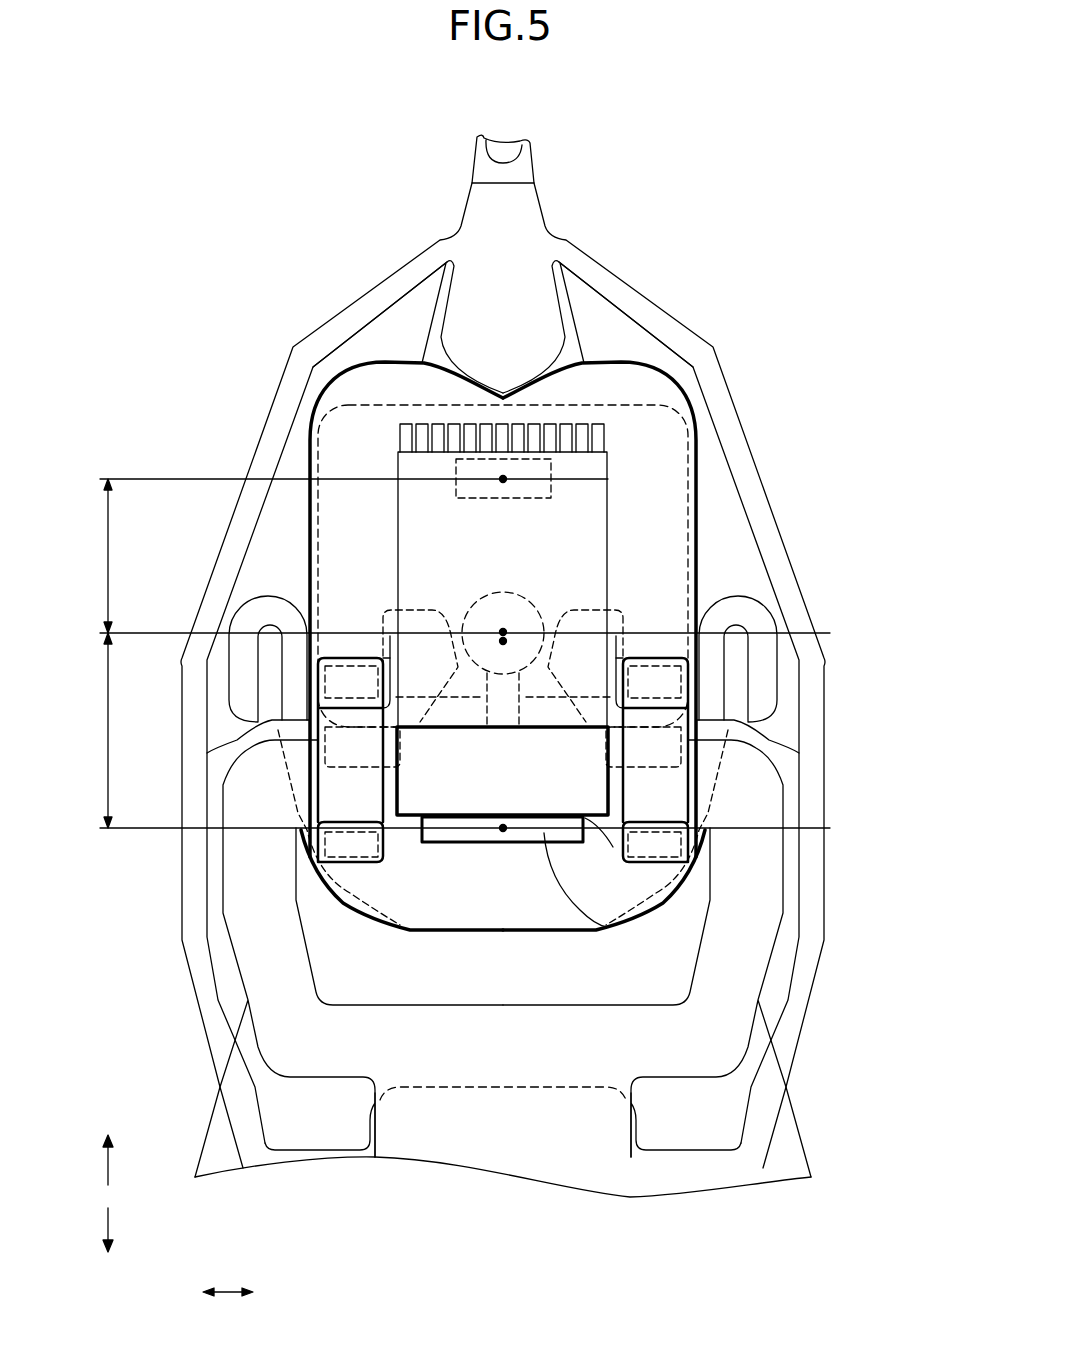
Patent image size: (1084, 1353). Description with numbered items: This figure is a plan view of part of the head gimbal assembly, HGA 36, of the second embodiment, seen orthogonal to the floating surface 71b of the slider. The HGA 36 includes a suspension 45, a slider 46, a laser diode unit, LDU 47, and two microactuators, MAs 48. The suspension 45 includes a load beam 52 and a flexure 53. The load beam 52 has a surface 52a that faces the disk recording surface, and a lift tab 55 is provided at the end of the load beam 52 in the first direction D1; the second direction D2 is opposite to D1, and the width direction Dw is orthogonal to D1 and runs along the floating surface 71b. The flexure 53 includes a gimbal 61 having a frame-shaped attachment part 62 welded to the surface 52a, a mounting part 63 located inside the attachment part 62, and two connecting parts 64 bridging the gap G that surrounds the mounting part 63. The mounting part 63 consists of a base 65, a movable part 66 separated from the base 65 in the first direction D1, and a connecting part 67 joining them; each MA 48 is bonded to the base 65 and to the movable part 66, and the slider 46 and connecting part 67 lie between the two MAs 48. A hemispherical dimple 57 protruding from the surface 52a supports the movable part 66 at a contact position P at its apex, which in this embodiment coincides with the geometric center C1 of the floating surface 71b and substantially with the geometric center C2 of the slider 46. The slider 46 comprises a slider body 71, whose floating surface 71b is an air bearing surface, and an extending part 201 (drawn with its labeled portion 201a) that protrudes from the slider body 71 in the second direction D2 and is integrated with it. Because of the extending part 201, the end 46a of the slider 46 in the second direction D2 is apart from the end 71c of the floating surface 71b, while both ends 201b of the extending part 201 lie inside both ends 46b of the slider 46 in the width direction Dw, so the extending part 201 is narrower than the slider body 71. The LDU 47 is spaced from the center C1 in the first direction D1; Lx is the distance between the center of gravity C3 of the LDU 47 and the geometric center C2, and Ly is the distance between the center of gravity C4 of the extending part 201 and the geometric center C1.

The HGA 36 is at (215, 165).
The suspension 45 is at (503, 680).
The flexure 53 is at (503, 680).
The gimbal 61 is at (503, 680).
The attachment part 62 is at (624, 276).
The lift tab 55 is at (534, 148).
The gap G is at (381, 344).
The mounting part 63 is at (700, 478).
The movable part 66 is at (667, 537).
The connecting parts 64 is at (237, 696).
The slider 46 is at (615, 480).
The end of the slider 46a is at (627, 887).
The ends of the slider 46b is at (337, 763).
The laser diode unit 47 is at (553, 477).
The center of gravity of the LDU C3 is at (503, 479).
The slider body 71 is at (647, 682).
The floating surface 71b is at (583, 565).
The end of the floating surface 71c is at (586, 838).
The dimple 57 is at (533, 593).
The geometric center of the floating surface C1 is at (703, 632).
The contact position P is at (503, 633).
The geometric center of the slider C2 is at (503, 641).
The center of gravity of the extending part C4 is at (503, 828).
The connecting part 67 is at (693, 727).
The microactuators 48 is at (334, 813).
The extending part 201 is at (631, 920).
The plate edge 201a is at (623, 930).
The ends of the extending part 201b is at (302, 830).
The base 65 is at (623, 917).
The load beam 52 is at (558, 1142).
The surface of the load beam 52a is at (800, 1152).
The distance Lx is at (106, 563).
The distance Ly is at (106, 750).
The first direction D1 is at (88, 1160).
The second direction D2 is at (88, 1230).
The width direction Dw is at (228, 1277).